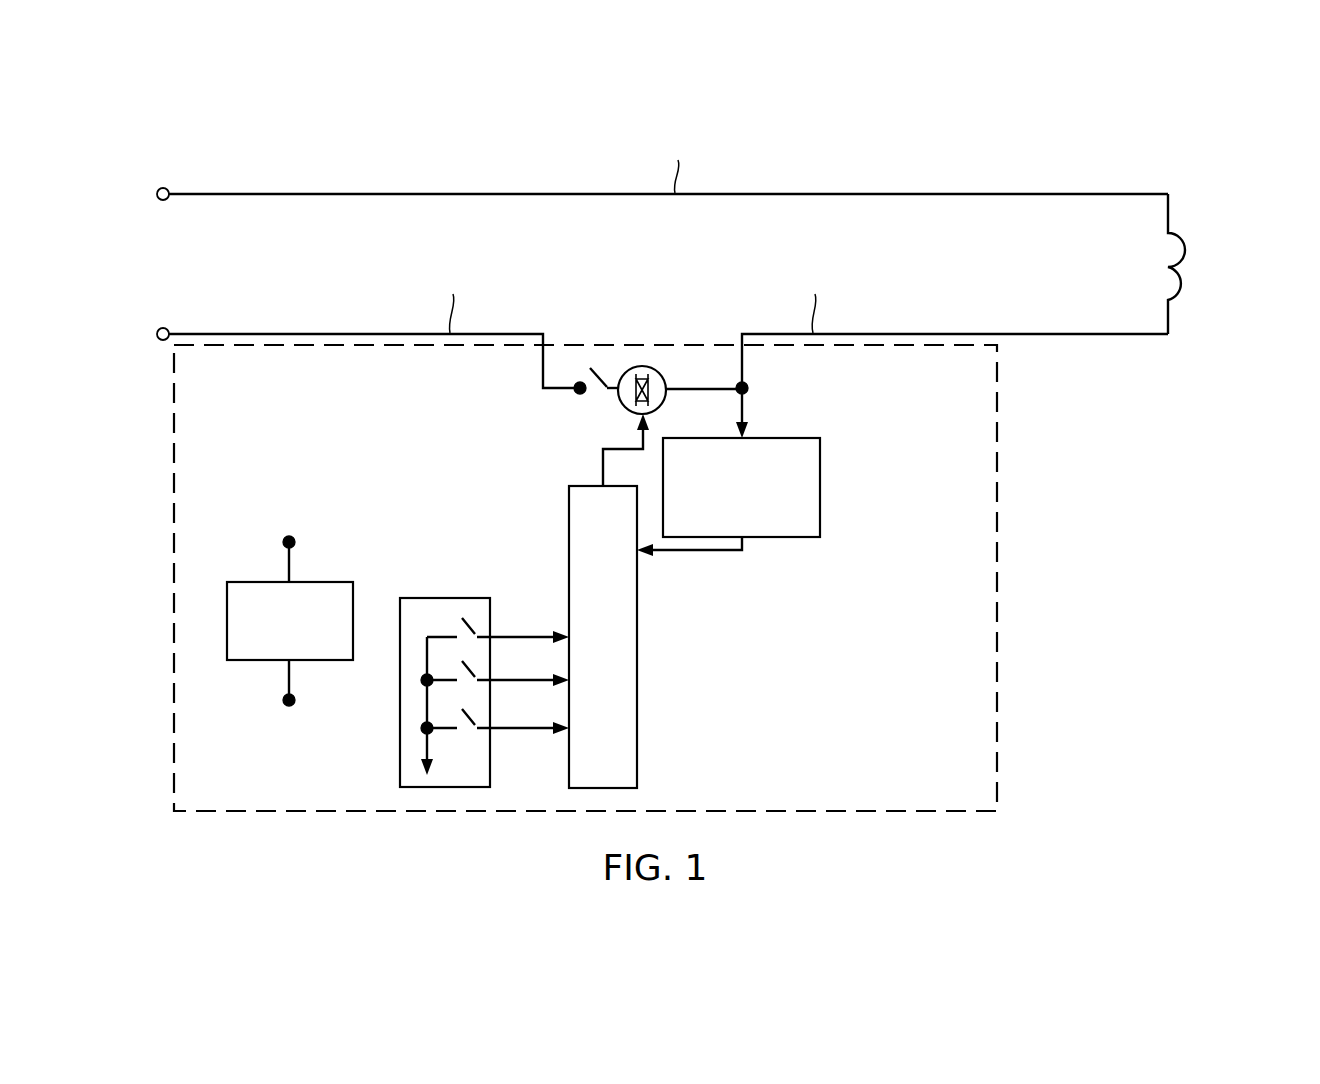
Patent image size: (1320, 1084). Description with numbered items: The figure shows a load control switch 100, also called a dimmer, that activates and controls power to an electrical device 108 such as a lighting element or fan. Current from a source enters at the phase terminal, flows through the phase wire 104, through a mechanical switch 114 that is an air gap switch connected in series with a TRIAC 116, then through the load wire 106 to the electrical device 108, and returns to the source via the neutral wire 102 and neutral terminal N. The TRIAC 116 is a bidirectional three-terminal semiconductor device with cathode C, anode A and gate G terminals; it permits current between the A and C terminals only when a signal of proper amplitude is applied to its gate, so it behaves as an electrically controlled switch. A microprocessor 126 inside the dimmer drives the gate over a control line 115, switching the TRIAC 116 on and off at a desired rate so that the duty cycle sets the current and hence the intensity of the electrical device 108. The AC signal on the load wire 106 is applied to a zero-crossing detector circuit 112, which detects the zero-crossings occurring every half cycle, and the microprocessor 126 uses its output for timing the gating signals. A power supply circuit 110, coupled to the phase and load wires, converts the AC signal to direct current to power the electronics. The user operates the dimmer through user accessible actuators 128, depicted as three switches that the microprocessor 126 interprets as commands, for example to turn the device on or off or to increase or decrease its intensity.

The load control switch 100 is at (997, 487).
The neutral wire 102 is at (363, 193).
The phase wire 104 is at (375, 333).
The load wire 106 is at (909, 333).
The electrical device 108 is at (1186, 252).
The power supply circuit 110 is at (247, 581).
The zero-crossing detector circuit 112 is at (820, 480).
The mechanical switch 114 is at (558, 392).
The control line 115 is at (603, 470).
The TRIAC 116 is at (641, 365).
The microprocessor 126 is at (637, 675).
The user accessible actuators 128 is at (442, 597).